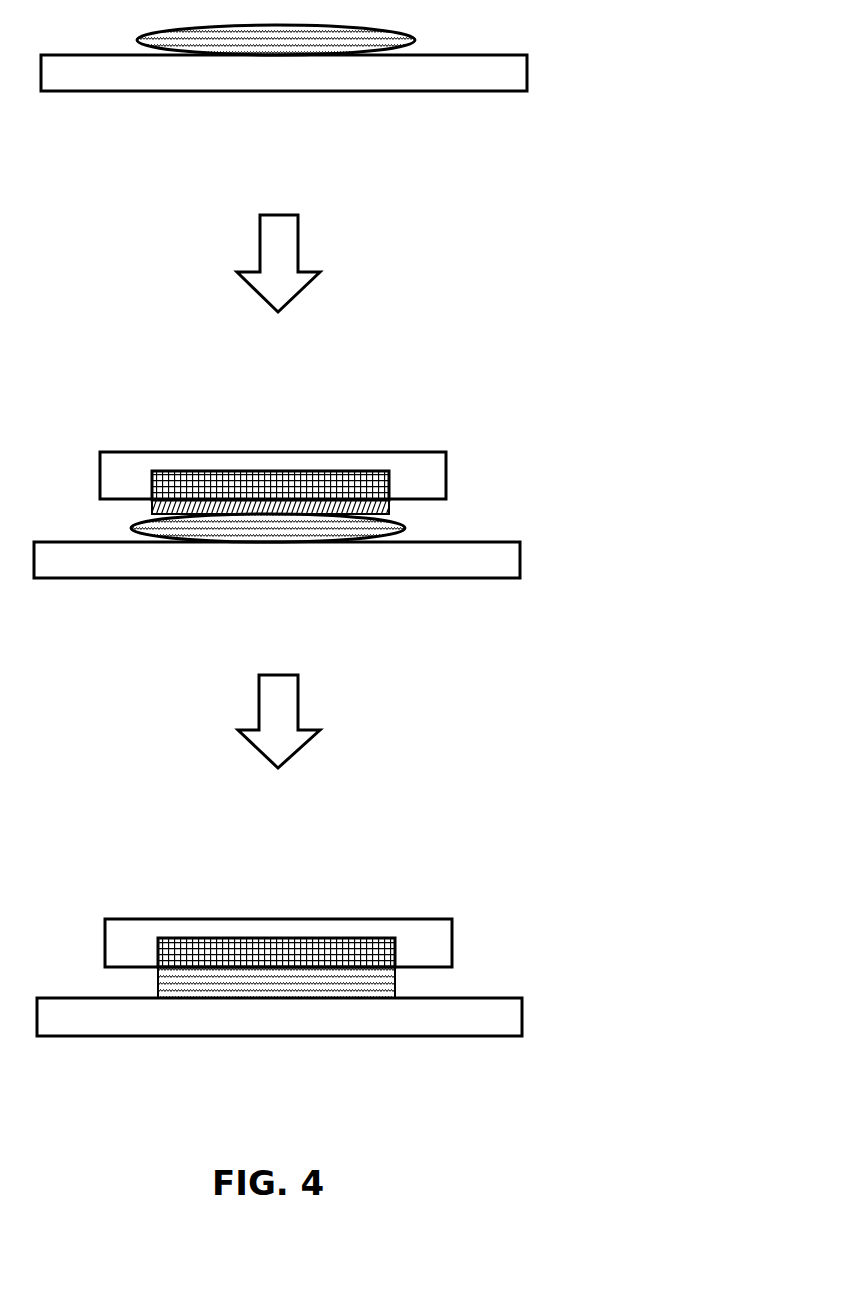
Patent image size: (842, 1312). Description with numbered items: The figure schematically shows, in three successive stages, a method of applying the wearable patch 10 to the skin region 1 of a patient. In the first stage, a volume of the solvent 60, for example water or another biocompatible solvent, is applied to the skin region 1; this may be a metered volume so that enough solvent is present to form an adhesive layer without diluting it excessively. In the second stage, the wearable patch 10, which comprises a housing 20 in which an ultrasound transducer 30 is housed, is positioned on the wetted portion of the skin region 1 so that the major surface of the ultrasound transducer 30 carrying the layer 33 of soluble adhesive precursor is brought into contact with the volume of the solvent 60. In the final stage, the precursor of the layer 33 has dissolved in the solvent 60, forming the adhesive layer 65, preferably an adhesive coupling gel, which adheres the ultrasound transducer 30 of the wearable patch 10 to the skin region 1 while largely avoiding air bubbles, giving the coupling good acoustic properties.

The skin region 1 is at (79, 72).
The solvent 60 is at (277, 38).
The housing 20 is at (212, 460).
The ultrasound transducer 30 is at (360, 487).
The layer of soluble precursor material 33 is at (270, 505).
The adhesive layer 65 is at (275, 983).
The wearable patch 10 is at (475, 438).